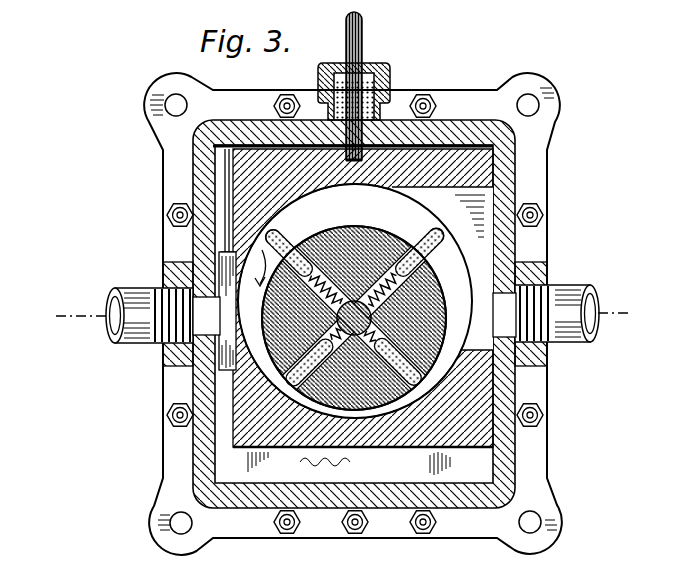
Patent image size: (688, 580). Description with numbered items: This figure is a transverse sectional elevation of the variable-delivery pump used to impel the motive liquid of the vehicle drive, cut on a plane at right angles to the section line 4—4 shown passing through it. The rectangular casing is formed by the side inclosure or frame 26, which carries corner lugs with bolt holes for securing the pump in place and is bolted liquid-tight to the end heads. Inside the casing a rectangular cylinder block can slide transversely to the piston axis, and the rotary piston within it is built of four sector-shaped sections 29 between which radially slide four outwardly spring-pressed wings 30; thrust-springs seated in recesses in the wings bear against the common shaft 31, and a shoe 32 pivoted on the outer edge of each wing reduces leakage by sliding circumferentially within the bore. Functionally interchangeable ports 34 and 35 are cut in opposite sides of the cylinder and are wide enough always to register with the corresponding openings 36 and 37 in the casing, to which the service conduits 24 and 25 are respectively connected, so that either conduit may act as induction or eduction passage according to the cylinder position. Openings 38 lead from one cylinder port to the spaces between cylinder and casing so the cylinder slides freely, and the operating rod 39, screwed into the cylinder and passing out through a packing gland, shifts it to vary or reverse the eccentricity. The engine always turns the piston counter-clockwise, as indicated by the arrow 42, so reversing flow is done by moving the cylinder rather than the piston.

The section line 4— 4 is at (340, 319).
The service conduit 24 is at (163, 315).
The service conduit 25 is at (548, 341).
The side inclosure or frame 26 is at (548, 178).
The piston sections 29 is at (275, 296).
The wings 30 is at (292, 243).
The shaft 31 is at (362, 300).
The shoe 32 is at (272, 231).
The port 34 is at (445, 268).
The port 35 is at (227, 311).
The opening 36 is at (550, 368).
The opening 37 is at (311, 310).
The openings 38 is at (223, 242).
The operating rod 39 is at (365, 40).
The arrow 42 is at (252, 268).